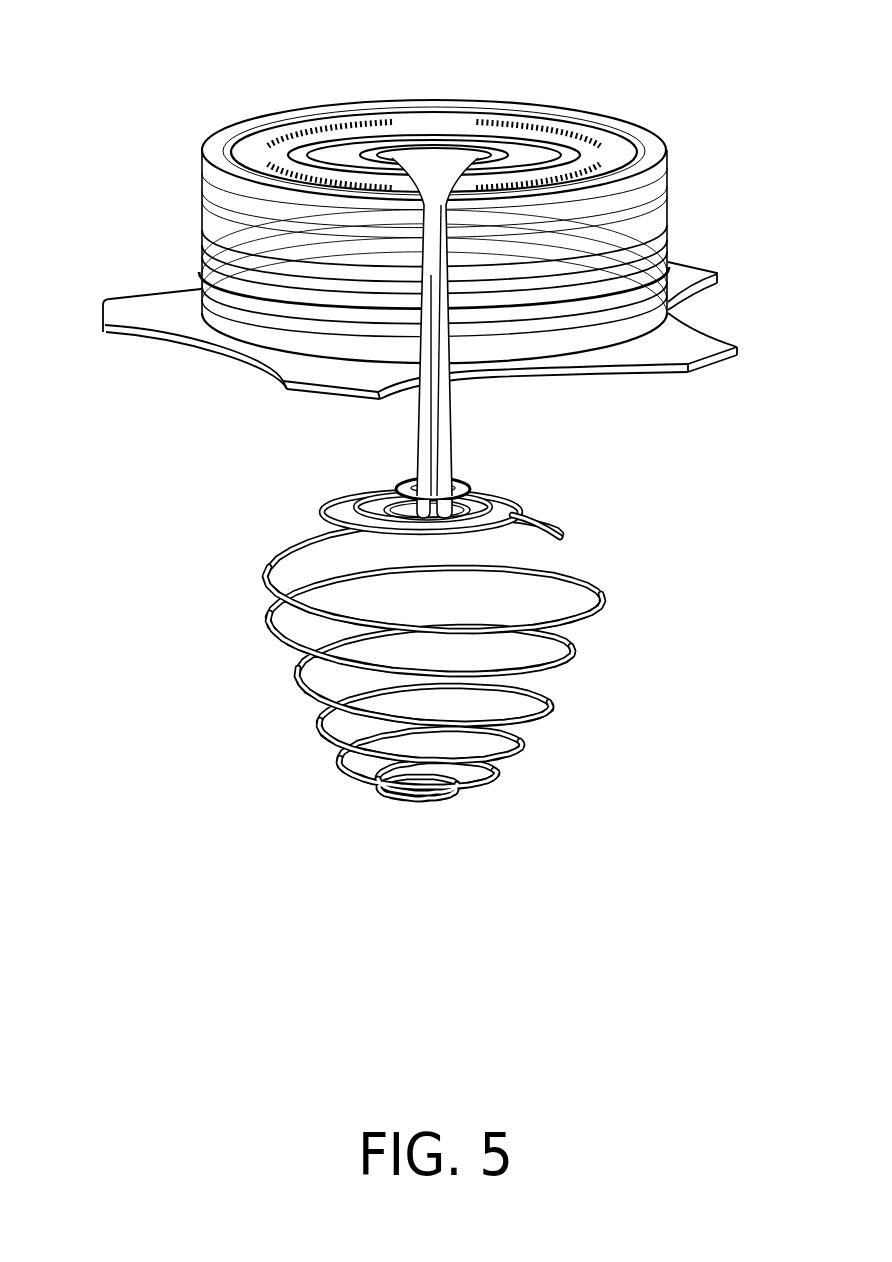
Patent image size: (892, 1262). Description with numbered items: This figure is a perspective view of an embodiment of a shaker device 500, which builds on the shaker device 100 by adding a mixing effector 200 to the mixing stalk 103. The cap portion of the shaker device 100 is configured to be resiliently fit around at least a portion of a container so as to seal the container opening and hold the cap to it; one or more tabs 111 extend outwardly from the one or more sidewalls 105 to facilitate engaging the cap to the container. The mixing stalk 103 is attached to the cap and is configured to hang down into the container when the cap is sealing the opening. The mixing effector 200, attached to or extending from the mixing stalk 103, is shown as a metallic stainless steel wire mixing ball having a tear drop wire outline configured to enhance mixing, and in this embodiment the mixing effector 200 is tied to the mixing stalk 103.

The shaker device 500 is at (205, 88).
The shaker device 100 is at (172, 233).
The sidewalls 105 is at (208, 189).
The tabs 111 is at (105, 316).
The mixing stalk 103 is at (417, 418).
The mixing effector 200 is at (253, 597).